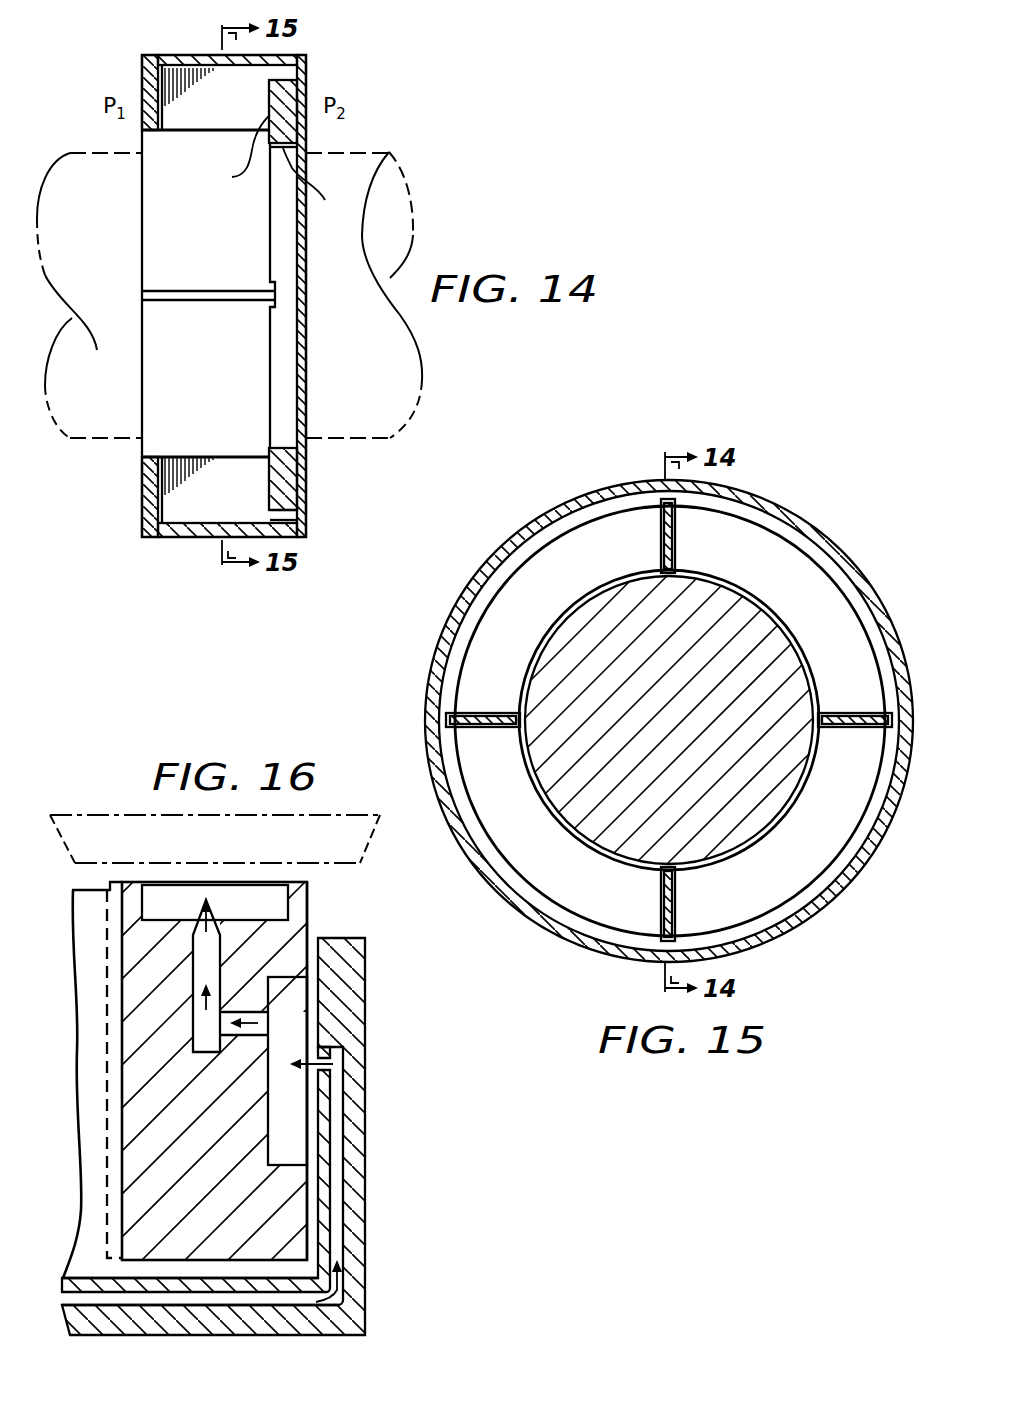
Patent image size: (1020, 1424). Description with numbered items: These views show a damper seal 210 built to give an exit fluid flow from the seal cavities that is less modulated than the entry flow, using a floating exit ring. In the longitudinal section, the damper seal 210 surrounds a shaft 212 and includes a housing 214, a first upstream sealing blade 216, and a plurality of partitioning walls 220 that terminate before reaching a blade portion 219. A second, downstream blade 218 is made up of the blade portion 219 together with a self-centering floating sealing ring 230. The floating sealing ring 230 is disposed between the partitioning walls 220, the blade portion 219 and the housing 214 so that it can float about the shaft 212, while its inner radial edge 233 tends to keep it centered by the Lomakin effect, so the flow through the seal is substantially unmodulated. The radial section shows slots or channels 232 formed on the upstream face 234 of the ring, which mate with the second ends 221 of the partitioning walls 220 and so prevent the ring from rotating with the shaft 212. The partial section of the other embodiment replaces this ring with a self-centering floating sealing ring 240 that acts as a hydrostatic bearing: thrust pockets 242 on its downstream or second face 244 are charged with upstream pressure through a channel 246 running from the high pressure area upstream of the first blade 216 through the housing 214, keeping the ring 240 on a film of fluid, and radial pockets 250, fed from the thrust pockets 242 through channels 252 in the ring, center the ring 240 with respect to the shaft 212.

In FIG. 14, the damper seal 210 is at (422, 86).
In FIG. 15, the damper seal 210 is at (846, 488).
In FIG. 14, the shaft 212 is at (376, 153).
In FIG. 15, the shaft 212 is at (691, 731).
In FIG. 16, the shaft 212 is at (152, 846).
In FIG. 14, the housing 214 is at (183, 55).
In FIG. 15, the housing 214 is at (548, 522).
In FIG. 16, the housing 214 is at (276, 1320).
In FIG. 14, the first (upstream) sealing blade 216 is at (142, 75).
In FIG. 14, the second or downstream blade 218 is at (328, 468).
In FIG. 14, the blade portion 219 is at (306, 80).
In FIG. 14, the partitioning walls 220 is at (243, 114).
In FIG. 15, the partitioning walls 220 is at (677, 522).
In FIG. 16, the partitioning walls 220 is at (78, 1048).
In FIG. 14, the second ends of partitioning walls 221 is at (300, 520).
In FIG. 16, the second ends of partitioning walls 221 is at (134, 1285).
In FIG. 14, the self-centering floating sealing ring 230 is at (230, 153).
In FIG. 15, the slots or channels 232 is at (660, 566).
In FIG. 14, the inner radial edge 233 is at (317, 184).
In FIG. 15, the upstream face 234 is at (543, 609).
In FIG. 16, the self-centering floating sealing ring 240 is at (209, 1170).
In FIG. 16, the thrust pockets 242 is at (292, 1009).
In FIG. 16, the downstream or second face 244 is at (309, 917).
In FIG. 16, the channel 246 is at (338, 1130).
In FIG. 16, the radial pockets 250 is at (270, 895).
In FIG. 16, the channels 252 is at (183, 968).